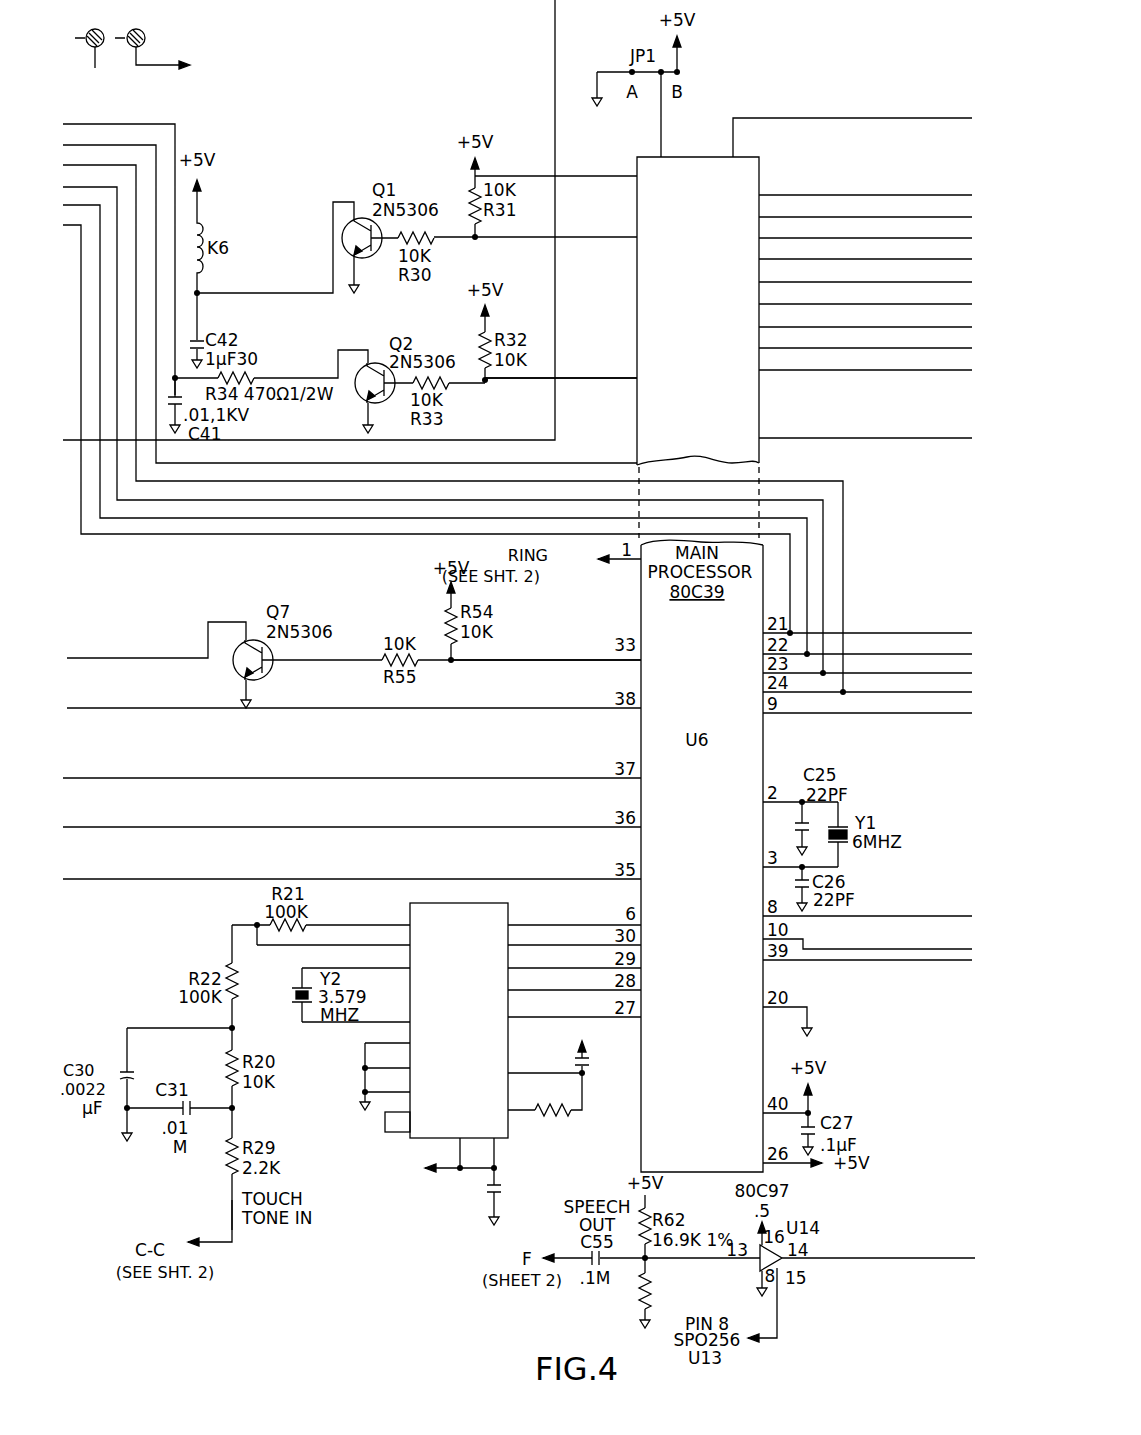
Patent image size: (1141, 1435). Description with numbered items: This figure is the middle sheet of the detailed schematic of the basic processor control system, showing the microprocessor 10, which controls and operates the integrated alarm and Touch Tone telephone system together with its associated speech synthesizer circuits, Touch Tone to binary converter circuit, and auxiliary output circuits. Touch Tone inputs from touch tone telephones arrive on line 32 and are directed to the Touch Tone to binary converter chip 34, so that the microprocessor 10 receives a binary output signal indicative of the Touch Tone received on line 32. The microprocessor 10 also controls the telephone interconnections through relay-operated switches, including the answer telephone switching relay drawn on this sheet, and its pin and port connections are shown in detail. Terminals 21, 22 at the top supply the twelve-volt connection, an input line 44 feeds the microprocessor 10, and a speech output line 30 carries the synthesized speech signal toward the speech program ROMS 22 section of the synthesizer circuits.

The microprocessor 10 is at (723, 305).
The terminal 21 is at (174, 42).
The speech program ROMS 22 is at (90, 39).
The speech output line 30 is at (632, 1267).
The line 32 is at (232, 1215).
The Touch Tone to binary converter chip 34 is at (449, 1054).
The input line 44 is at (550, 655).